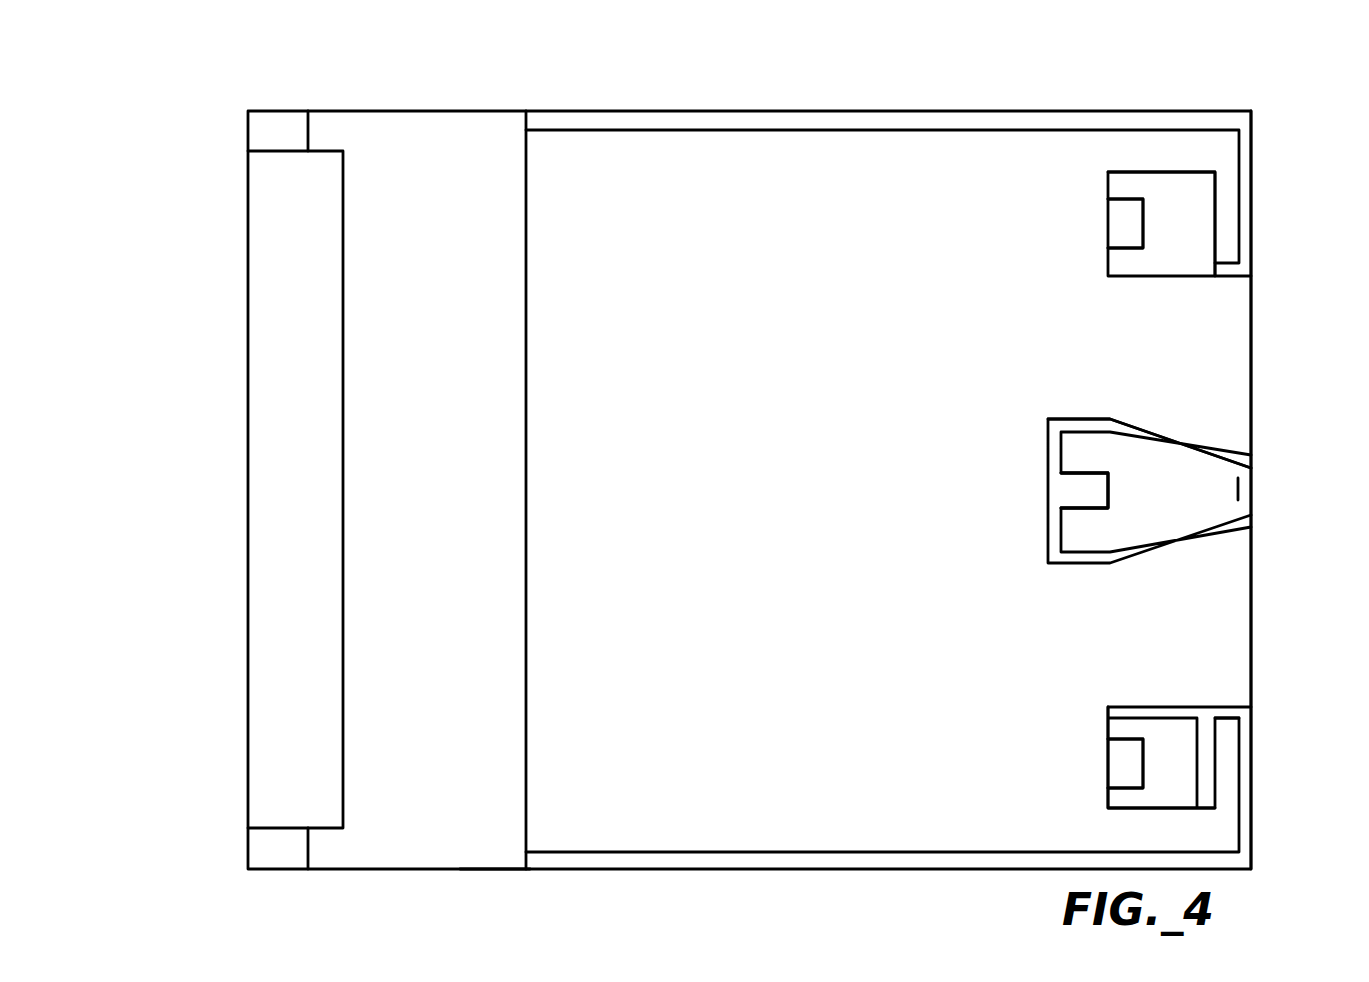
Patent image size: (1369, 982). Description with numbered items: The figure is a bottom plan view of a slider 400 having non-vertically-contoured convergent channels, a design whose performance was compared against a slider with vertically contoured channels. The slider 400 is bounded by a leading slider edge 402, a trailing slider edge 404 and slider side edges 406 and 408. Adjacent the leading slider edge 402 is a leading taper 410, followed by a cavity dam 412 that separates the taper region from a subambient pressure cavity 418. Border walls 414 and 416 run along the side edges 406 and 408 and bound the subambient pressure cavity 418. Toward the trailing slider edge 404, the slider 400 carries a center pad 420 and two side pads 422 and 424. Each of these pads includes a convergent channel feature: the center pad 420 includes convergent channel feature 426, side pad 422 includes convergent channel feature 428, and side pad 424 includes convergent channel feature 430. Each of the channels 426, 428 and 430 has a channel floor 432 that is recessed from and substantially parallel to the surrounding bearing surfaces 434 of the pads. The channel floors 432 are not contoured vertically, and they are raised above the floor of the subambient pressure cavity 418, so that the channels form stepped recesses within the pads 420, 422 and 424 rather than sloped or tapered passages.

The slider 400 is at (224, 86).
The leading slider edge 402 is at (246, 780).
The trailing slider edge 404 is at (1254, 640).
The slider side edge 406 is at (466, 110).
The slider side edge 408 is at (462, 870).
The leading taper 410 is at (266, 281).
The cavity dam 412 is at (427, 131).
The border wall 414 is at (893, 115).
The border wall 416 is at (726, 858).
The subambient pressure cavity 418 is at (882, 491).
The center pad 420 is at (1220, 439).
The side pad 422 is at (1150, 284).
The side pad 424 is at (1192, 703).
The convergent channel feature 426 is at (1066, 491).
The convergent channel feature 428 is at (1104, 226).
The convergent channel feature 430 is at (1104, 775).
The channel floor 432 is at (1122, 210).
The bearing surface 434 is at (1210, 230).